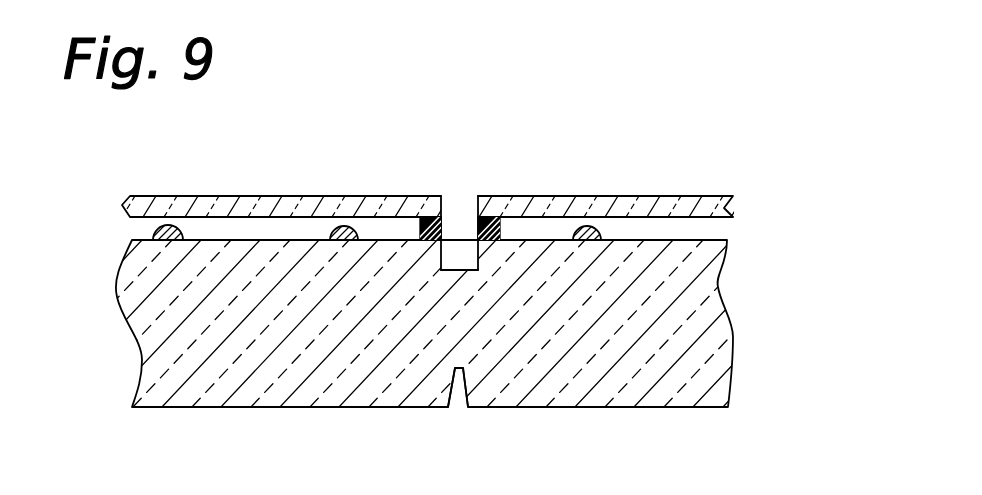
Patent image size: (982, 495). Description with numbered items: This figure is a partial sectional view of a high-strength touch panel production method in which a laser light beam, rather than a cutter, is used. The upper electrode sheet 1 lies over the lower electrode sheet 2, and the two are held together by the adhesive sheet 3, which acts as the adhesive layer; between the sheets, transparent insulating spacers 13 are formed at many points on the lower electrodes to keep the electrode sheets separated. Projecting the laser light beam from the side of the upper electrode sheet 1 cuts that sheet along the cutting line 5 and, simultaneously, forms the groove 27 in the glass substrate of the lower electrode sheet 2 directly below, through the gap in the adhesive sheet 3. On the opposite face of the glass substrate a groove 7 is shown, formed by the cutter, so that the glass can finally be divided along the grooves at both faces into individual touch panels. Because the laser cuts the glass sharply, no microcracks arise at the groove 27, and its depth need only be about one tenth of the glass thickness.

The upper electrode sheet 1 is at (734, 205).
The lower electrode sheet 2 is at (733, 335).
The adhesive sheet 3 is at (433, 196).
The cutting line 5 is at (455, 193).
The groove 7 is at (460, 412).
The transparent insulating spacer 13 is at (345, 228).
The groove 27 is at (462, 273).